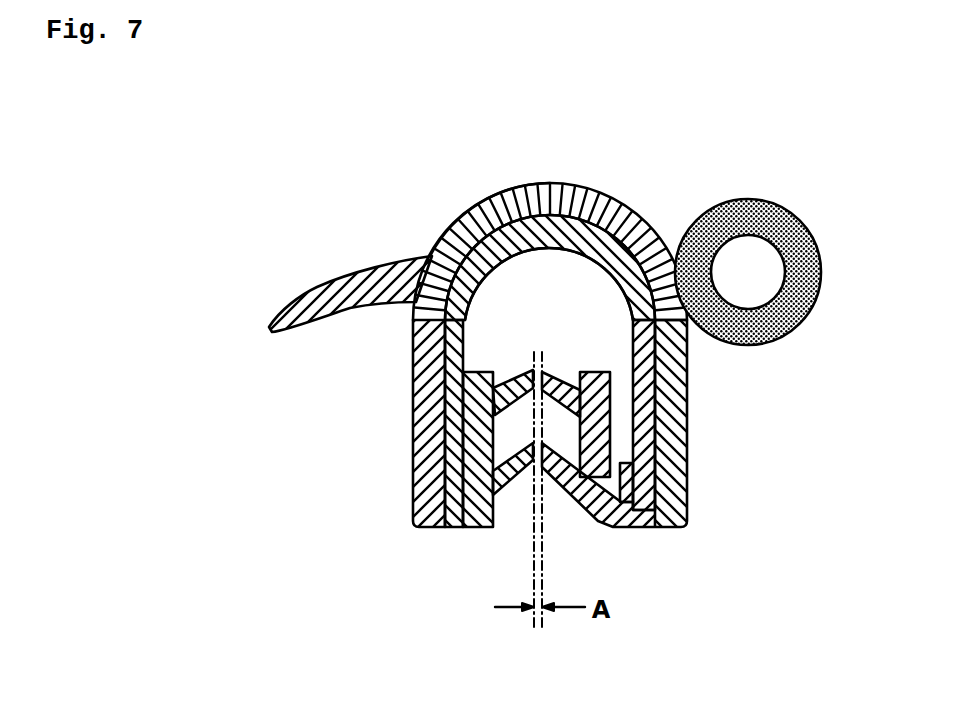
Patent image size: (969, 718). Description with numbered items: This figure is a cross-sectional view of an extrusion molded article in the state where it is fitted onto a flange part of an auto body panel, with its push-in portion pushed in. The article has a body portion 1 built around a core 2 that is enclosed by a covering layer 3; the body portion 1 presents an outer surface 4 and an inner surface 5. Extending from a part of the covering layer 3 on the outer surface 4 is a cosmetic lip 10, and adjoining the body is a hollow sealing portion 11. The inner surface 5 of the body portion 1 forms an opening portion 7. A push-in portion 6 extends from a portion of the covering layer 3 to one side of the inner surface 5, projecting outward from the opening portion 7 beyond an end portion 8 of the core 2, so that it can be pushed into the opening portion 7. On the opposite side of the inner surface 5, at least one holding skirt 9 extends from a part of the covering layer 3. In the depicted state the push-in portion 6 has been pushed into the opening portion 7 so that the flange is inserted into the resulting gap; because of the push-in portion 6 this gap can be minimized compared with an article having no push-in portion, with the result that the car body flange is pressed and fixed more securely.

The body portion 1 is at (612, 198).
The core 2 is at (538, 187).
The covering layer 3 is at (468, 212).
The outer surface 4 is at (412, 354).
The inner surface 5 is at (465, 306).
The push-in portion 6 is at (598, 372).
The opening portion 7 is at (545, 300).
The end portion 8 is at (434, 531).
The holding skirt 9 is at (518, 483).
The cosmetic lip 10 is at (335, 279).
The hollow sealing portion 11 is at (812, 240).